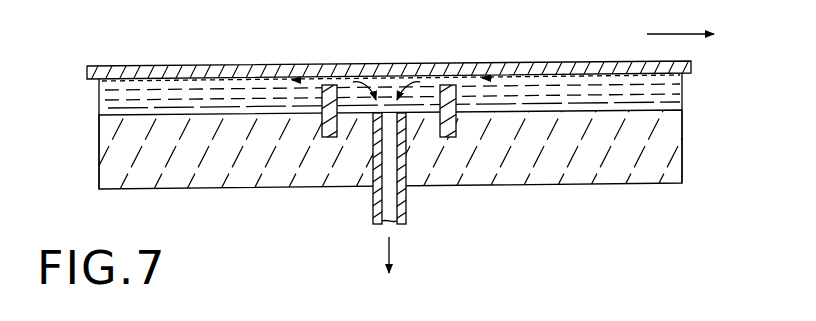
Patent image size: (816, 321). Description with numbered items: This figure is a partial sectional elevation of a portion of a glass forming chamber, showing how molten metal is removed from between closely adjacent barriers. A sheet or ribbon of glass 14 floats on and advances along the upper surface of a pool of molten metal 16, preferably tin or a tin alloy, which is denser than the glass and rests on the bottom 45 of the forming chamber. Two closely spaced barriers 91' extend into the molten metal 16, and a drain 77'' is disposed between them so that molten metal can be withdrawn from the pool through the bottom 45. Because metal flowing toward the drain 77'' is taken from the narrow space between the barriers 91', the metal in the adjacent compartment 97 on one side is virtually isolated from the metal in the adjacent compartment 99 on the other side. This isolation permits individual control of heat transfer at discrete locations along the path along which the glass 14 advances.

The sheet or ribbon of glass 14 is at (457, 74).
The pool of molten metal 16 is at (382, 79).
The bottom 45 is at (561, 183).
The drain 77'' is at (419, 173).
The barriers 91' is at (373, 144).
The compartment 97 is at (107, 106).
The compartment 99 is at (672, 100).